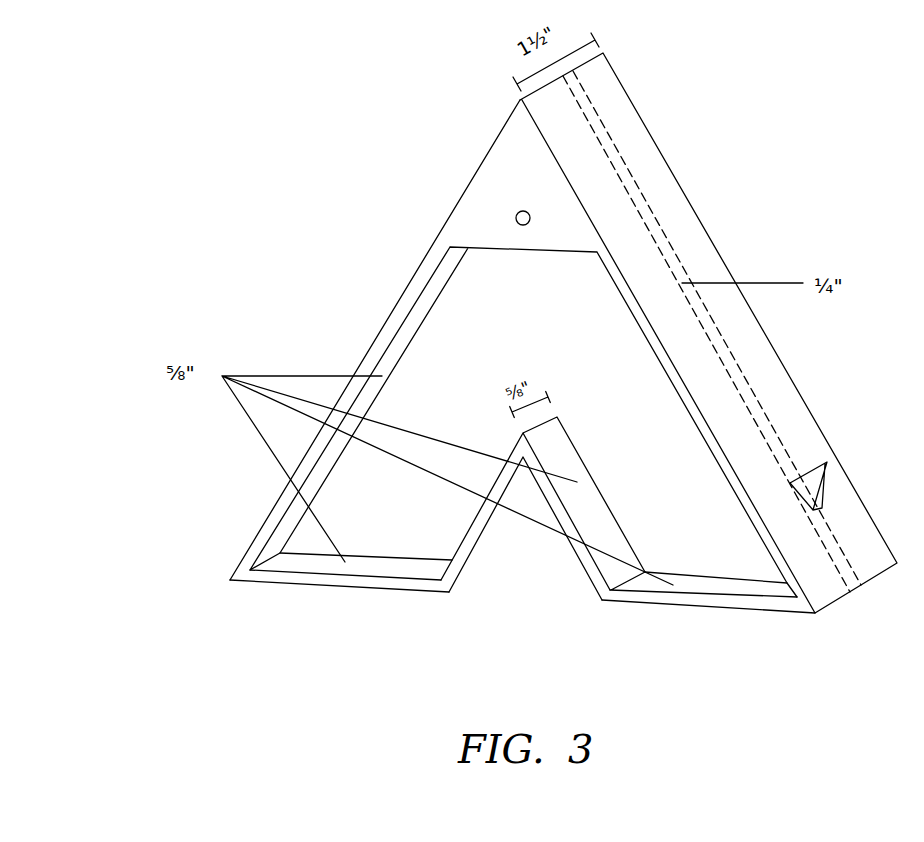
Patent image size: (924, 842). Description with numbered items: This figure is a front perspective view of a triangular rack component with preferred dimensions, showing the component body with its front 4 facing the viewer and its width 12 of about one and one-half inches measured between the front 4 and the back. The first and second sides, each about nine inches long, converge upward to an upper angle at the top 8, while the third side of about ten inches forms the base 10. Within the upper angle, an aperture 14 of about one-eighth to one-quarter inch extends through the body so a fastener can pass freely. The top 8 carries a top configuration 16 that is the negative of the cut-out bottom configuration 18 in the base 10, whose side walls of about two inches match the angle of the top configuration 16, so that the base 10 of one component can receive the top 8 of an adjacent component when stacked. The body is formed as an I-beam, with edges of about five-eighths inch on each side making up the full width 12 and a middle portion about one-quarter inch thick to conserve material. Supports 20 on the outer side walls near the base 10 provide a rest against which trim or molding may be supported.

The front 4 is at (440, 342).
The top 8 is at (498, 138).
The base 10 is at (720, 611).
The width 12 is at (787, 403).
The aperture 14 is at (529, 212).
The top configuration 16 is at (645, 157).
The bottom configuration 18 is at (477, 543).
The supports 20 is at (829, 468).